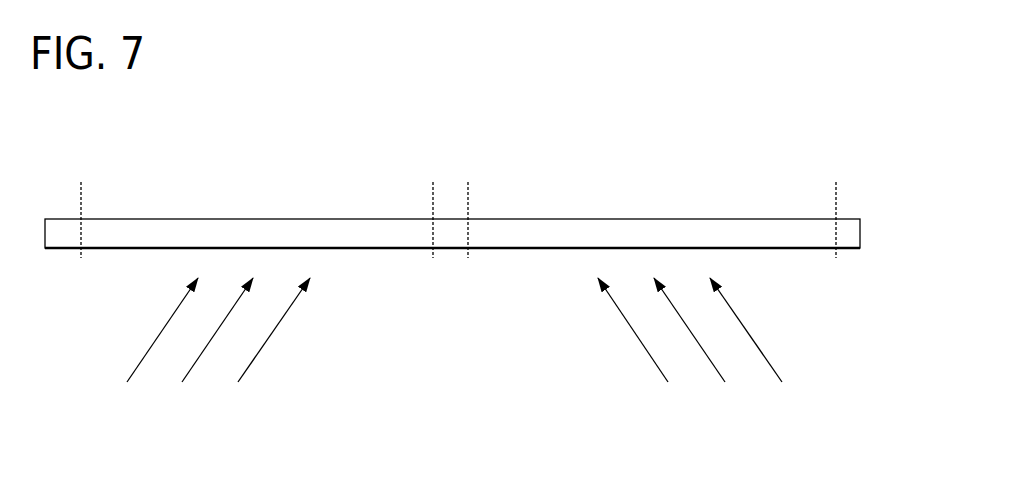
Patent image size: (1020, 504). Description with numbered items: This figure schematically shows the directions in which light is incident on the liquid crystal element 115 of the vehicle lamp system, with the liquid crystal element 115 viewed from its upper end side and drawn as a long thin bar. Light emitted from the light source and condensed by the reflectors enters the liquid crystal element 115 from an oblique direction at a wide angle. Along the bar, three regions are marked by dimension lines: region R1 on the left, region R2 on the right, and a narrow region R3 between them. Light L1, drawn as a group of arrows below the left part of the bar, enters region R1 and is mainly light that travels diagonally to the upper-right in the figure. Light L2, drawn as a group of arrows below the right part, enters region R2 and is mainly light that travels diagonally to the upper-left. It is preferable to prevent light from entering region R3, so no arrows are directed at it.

The liquid crystal element 115 is at (859, 205).
The region R1 is at (433, 191).
The region R2 is at (468, 191).
The region R3 is at (468, 191).
The light L1 is at (267, 392).
The light L2 is at (797, 392).